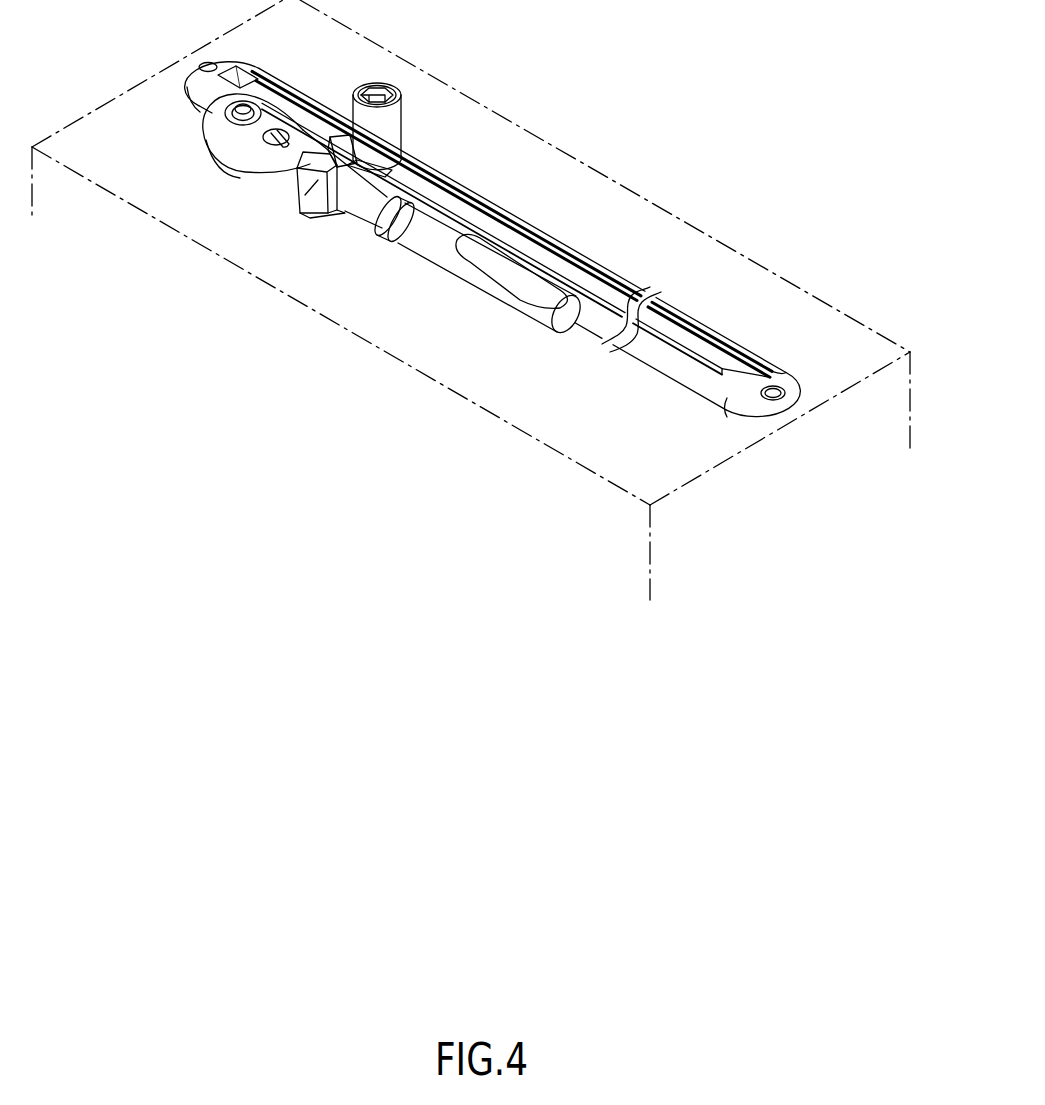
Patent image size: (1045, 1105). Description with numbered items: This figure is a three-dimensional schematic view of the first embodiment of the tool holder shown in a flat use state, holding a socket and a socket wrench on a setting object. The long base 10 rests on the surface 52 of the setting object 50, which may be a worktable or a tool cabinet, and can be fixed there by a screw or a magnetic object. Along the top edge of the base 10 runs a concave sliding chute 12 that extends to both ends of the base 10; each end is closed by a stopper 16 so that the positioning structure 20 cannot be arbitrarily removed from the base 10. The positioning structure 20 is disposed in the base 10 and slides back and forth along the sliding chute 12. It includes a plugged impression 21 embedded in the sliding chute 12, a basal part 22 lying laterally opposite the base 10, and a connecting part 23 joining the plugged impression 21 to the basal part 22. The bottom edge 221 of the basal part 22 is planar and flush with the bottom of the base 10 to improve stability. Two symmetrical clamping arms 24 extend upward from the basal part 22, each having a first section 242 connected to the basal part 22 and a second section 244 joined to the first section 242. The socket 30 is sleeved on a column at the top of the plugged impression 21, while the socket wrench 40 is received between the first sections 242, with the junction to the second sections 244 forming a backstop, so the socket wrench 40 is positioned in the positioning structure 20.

The base 10 is at (499, 300).
The sliding chute 12 is at (600, 302).
The stopper 16 is at (757, 408).
The positioning structure 20 is at (204, 291).
The plugged impression 21 is at (408, 195).
The basal part 22 is at (310, 203).
The bottom edge 221 is at (343, 212).
The connecting part 23 is at (463, 197).
The clamping arm 24 is at (204, 291).
The first section 242 is at (228, 299).
The second section 244 is at (308, 158).
The socket 30 is at (390, 118).
The socket wrench 40 is at (490, 290).
The setting object 50 is at (491, 300).
The surface 52 is at (837, 337).